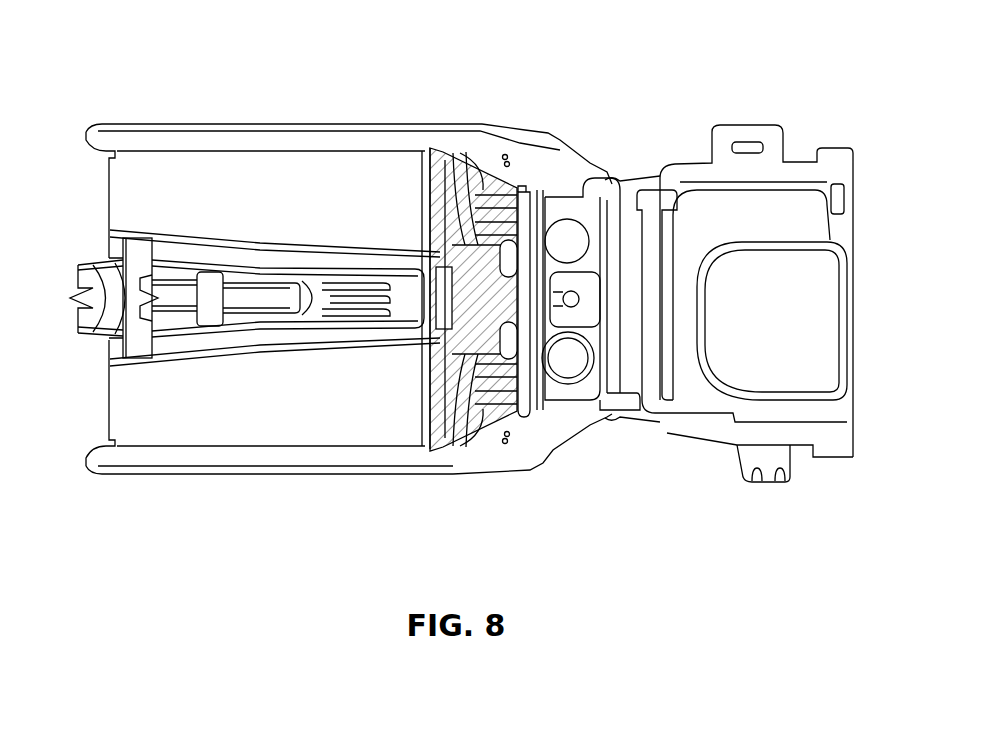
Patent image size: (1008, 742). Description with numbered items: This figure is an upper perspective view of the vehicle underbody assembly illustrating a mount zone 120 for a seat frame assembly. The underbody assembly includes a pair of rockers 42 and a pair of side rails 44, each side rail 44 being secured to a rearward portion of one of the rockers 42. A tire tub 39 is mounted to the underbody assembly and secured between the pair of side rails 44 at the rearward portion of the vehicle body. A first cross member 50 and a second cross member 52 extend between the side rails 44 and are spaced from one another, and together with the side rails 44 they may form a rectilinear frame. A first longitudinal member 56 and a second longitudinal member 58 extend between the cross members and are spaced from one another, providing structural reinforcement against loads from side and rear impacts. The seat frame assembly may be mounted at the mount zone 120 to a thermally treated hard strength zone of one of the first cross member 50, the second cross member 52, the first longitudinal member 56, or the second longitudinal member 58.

The tire tub 39 is at (733, 212).
The rockers 42 is at (262, 146).
The side rails 44 is at (520, 165).
The first cross member 50 is at (545, 405).
The second cross member 52 is at (440, 162).
The first longitudinal member 56 is at (473, 260).
The second longitudinal member 58 is at (460, 390).
The mount zone 120 is at (495, 395).